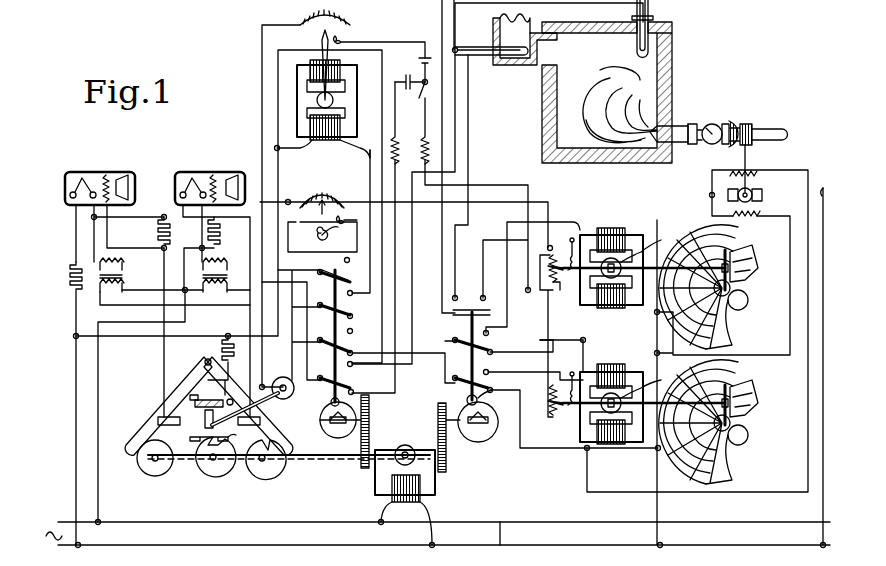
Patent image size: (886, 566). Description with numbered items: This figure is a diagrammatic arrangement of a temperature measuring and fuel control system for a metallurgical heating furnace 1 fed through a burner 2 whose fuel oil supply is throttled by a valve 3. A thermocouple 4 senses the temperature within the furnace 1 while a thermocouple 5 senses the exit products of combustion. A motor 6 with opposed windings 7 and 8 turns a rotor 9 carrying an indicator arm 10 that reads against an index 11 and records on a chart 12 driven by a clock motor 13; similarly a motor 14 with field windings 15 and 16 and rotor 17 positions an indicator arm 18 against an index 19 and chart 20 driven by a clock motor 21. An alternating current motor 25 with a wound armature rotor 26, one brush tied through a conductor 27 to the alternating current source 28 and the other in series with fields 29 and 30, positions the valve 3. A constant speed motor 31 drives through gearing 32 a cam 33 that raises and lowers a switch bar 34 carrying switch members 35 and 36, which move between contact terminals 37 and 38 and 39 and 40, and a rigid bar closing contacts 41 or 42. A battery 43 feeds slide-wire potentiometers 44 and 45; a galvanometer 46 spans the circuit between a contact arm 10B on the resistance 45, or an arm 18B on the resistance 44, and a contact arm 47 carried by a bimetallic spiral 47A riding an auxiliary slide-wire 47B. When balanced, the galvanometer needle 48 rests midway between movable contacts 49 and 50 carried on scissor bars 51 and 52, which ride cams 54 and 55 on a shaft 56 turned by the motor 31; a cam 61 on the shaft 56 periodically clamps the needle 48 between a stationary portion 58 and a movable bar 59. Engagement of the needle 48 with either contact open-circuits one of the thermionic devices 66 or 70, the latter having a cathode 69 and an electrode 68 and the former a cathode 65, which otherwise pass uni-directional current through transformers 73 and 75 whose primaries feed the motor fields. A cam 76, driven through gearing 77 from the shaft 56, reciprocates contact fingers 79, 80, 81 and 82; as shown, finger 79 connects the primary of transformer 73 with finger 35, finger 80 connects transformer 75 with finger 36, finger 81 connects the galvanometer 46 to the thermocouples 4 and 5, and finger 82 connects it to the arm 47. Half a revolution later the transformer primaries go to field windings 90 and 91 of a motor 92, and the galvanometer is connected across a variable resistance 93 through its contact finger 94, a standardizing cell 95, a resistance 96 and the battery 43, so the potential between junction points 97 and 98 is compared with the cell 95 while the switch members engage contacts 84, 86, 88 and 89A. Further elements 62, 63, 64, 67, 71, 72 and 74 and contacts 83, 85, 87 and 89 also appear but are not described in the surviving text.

The metallurgical heating furnace 1 is at (672, 55).
The burner 2 is at (690, 122).
The valve 3 is at (708, 120).
The thermocouple 4 is at (636, 52).
The thermocouple 5 is at (530, 50).
The motor 6 is at (580, 378).
The winding 7 is at (627, 356).
The winding 8 is at (612, 444).
The rotor 9 is at (636, 391).
The indicator arm 10 is at (678, 399).
The contact arm 10B is at (565, 410).
The index 11 is at (750, 367).
The chart 12 is at (753, 398).
The clock motor 13 is at (756, 433).
The motor 14 is at (598, 228).
The field winding 15 is at (630, 222).
The field winding 16 is at (612, 308).
The rotor 17 is at (641, 252).
The indicator arm 18 is at (678, 264).
The contact arm 18B is at (565, 275).
The index 19 is at (750, 232).
The recording chart 20 is at (755, 263).
The clock motor 21 is at (756, 298).
The alternating current motor 25 is at (697, 196).
The wound armature rotor 26 is at (752, 188).
The conductor 27 is at (816, 184).
The alternating current source 28 is at (505, 527).
The field 29 is at (758, 170).
The field 30 is at (757, 214).
The constant speed alternating current motor 31 is at (437, 480).
The gearing 32 is at (436, 425).
The cam 33 is at (492, 434).
The switch bar 34 is at (490, 403).
The switch member 35 is at (455, 382).
The switch member 36 is at (455, 344).
The contact terminal 37 is at (492, 390).
The contact terminal 38 is at (488, 374).
The contact terminal 39 is at (492, 352).
The contact terminal 40 is at (488, 335).
The contacts 41 is at (452, 320).
The contacts 42 is at (464, 286).
The battery 43 is at (415, 54).
The slide-wire potentiometer 44 is at (548, 266).
The slide-wire potentiometer 45 is at (548, 414).
The galvanometer 46 is at (292, 396).
The contact arm 47 is at (322, 222).
The bimetallic spiral 47A is at (312, 240).
The auxiliary slide-wire resistance 47B is at (350, 187).
The galvanometer needle 48 is at (190, 437).
The movable contact 49 is at (158, 421).
The movable contact 50 is at (260, 421).
The scissor bar 51 is at (128, 440).
The scissor bar 52 is at (290, 438).
The cam 54 is at (142, 472).
The cam 55 is at (275, 472).
The shaft 56 is at (338, 468).
The stationary portion 58 is at (205, 395).
The movable bar 59 is at (240, 430).
The cam 61 is at (205, 477).
The resistor 62 is at (222, 345).
The resistor 63 is at (208, 232).
The relay coil 64 is at (219, 166).
The cathode 65 is at (190, 172).
The thermionic device 66 is at (176, 187).
The resistor 67 is at (158, 232).
The electrode 68 is at (112, 166).
The cathode 69 is at (80, 172).
The thermionic device 70 is at (66, 187).
The resistor 71 is at (68, 276).
The magnet 72 is at (238, 174).
The transformer 73 is at (204, 275).
The magnet 74 is at (128, 174).
The transformer 75 is at (123, 275).
The cam 76 is at (330, 435).
The gearing 77 is at (370, 405).
The contact finger 79 is at (329, 383).
The contact finger 80 is at (329, 337).
The contact finger 81 is at (329, 300).
The contact finger 82 is at (318, 276).
The contact 83 is at (353, 392).
The contact 84 is at (352, 366).
The contact 85 is at (352, 355).
The contact 86 is at (356, 342).
The contact 87 is at (358, 316).
The contact 88 is at (358, 294).
The contact arm 89 is at (334, 260).
The contact 89A is at (345, 257).
The field winding 90 is at (340, 78).
The field winding 91 is at (330, 142).
The motor 92 is at (300, 148).
The variable resistance 93 is at (356, 14).
The contact finger 94 is at (318, 43).
The standardizing cell 95 is at (400, 72).
The resistance 96 is at (406, 127).
The junction point 97 is at (413, 129).
The junction point 98 is at (288, 199).